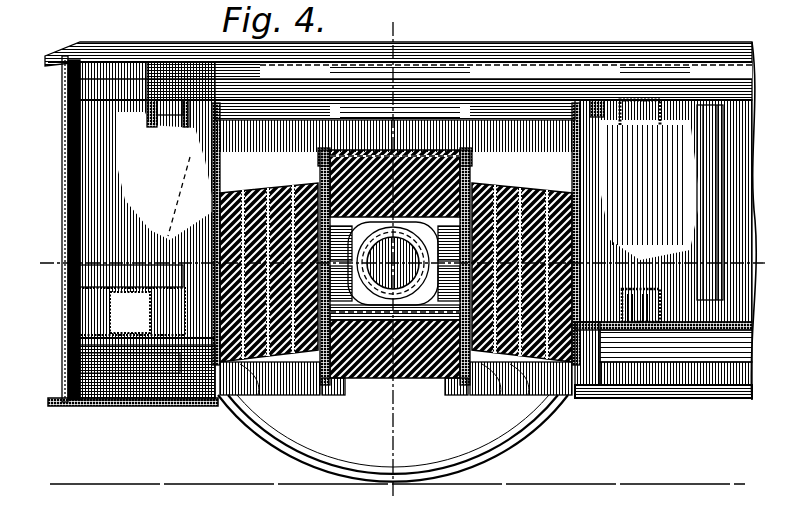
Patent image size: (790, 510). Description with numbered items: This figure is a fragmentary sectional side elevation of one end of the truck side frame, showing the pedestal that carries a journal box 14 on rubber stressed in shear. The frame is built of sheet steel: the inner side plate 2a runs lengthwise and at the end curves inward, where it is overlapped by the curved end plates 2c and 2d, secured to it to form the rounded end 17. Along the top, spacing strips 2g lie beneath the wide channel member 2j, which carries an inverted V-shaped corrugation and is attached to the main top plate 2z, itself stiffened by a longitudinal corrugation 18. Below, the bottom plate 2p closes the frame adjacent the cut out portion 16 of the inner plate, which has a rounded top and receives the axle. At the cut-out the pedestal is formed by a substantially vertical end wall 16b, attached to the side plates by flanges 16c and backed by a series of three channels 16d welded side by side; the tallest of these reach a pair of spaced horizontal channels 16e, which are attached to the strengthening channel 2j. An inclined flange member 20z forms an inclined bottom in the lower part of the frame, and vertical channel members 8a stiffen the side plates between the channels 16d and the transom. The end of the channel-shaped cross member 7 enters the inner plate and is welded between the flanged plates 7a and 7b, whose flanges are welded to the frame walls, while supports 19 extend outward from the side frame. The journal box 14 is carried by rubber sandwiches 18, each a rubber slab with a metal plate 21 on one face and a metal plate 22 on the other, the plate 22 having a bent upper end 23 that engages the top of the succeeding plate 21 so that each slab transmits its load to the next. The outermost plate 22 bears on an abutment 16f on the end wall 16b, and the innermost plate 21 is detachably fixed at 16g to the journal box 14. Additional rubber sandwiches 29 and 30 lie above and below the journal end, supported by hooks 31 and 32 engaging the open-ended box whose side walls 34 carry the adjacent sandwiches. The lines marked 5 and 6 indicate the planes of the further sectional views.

The inner side plate 2a is at (122, 105).
The curved end plate 2c is at (64, 126).
The curved end plate 2d is at (66, 106).
The spacing strips 2g is at (92, 406).
The channel member 2j is at (624, 82).
The main top plate 2z is at (697, 46).
The bottom plate 2p is at (705, 394).
The section line 5- 5 is at (44, 270).
The section line 6- 6 is at (378, 23).
The cross member 7 is at (112, 314).
The flanged plate 7a is at (72, 290).
The flanged plate 7b is at (65, 347).
The vertical channel member 8a is at (708, 188).
The journal box 14 is at (412, 386).
The cut out portion 16 is at (438, 384).
The end wall 16b is at (213, 153).
The flanges 16c is at (583, 150).
The channels 16d is at (208, 170).
The horizontal channels 16e is at (447, 108).
The abutment 16f is at (214, 150).
The detachable fixing 16g is at (326, 160).
The rounded ends 17 is at (60, 178).
The rubber sandwich 18 is at (112, 40).
The supports 19 is at (150, 116).
The inclined flange member 20z is at (740, 323).
The metal plate 21 is at (272, 404).
The metal plate 22 is at (217, 408).
The bent upper end 23 is at (232, 195).
The rubber sandwich 29 is at (442, 170).
The rubber sandwich 30 is at (370, 380).
The hook 31 is at (394, 152).
The hook 32 is at (355, 386).
The side walls 34 is at (420, 166).